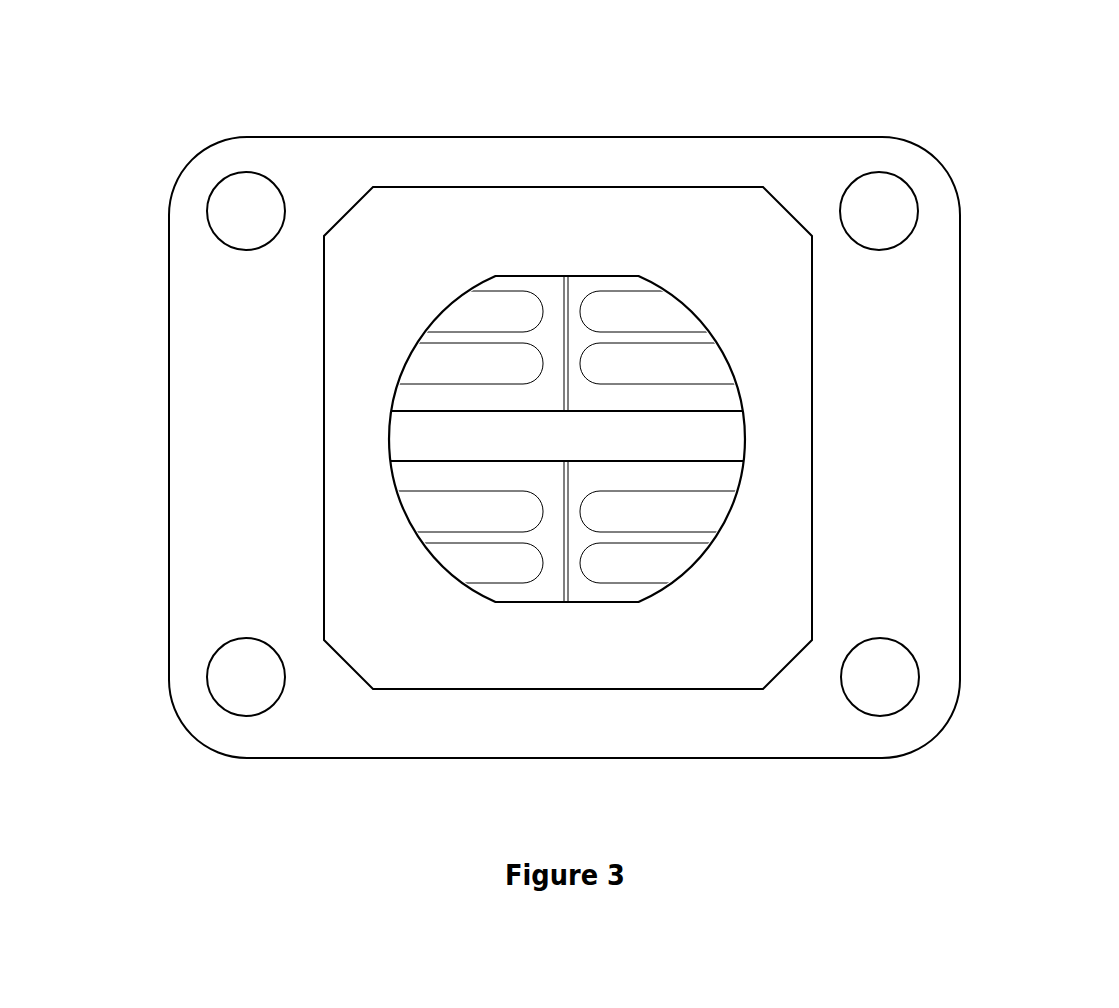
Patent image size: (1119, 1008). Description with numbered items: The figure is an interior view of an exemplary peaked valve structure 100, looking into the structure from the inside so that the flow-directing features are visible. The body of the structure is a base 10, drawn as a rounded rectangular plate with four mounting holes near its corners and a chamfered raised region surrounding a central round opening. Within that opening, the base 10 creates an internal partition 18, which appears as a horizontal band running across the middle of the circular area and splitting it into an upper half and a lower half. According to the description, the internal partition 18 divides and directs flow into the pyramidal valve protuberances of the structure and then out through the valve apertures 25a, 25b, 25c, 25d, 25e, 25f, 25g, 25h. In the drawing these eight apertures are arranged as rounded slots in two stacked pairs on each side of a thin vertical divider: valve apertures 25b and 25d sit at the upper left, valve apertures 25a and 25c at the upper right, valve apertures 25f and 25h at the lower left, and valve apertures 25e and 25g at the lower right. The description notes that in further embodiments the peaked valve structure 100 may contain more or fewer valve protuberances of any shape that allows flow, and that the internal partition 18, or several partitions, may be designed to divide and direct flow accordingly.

The peaked valve structure 100 is at (761, 58).
The base 10 is at (938, 258).
The internal partition 18 is at (693, 438).
The valve aperture 25a is at (626, 307).
The valve aperture 25b is at (504, 317).
The valve aperture 25c is at (686, 372).
The valve aperture 25d is at (435, 362).
The valve aperture 25e is at (710, 512).
The valve aperture 25f is at (425, 512).
The valve aperture 25g is at (650, 562).
The valve aperture 25h is at (480, 560).